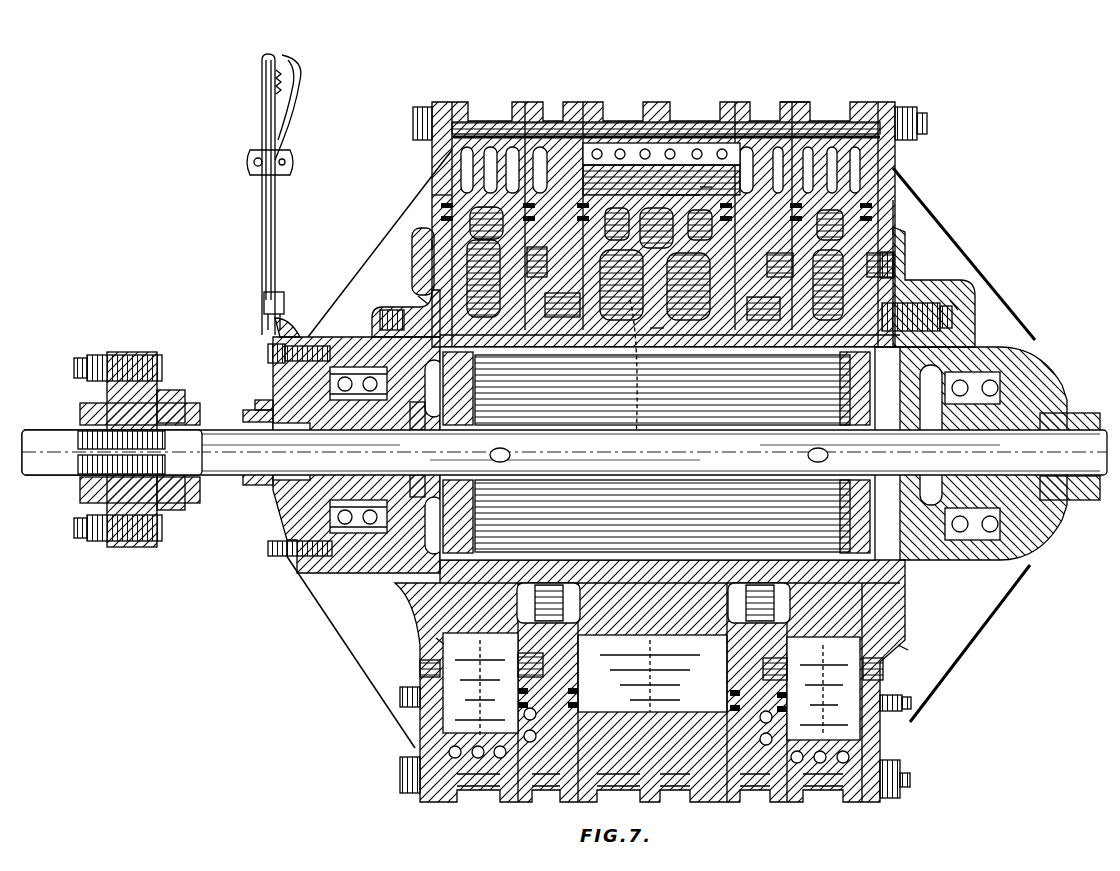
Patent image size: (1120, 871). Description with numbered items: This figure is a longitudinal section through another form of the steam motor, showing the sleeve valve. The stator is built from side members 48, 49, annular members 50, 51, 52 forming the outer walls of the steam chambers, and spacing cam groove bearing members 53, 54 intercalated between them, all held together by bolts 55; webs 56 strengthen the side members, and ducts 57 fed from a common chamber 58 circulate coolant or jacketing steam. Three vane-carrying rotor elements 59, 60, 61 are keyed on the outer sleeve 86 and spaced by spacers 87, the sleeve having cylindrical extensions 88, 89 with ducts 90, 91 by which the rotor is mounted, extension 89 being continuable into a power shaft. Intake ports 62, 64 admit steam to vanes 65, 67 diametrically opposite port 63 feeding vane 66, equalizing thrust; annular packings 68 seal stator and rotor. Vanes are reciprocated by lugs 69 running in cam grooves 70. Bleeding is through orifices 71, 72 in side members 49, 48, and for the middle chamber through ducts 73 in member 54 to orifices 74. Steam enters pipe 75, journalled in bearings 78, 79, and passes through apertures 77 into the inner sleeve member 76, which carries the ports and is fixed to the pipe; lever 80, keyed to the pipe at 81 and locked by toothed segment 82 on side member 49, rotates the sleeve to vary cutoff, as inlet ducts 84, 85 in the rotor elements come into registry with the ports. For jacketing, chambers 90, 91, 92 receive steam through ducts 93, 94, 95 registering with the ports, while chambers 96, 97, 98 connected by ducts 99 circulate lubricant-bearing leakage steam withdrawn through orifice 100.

The side member 48 is at (896, 168).
The side member 49 is at (452, 160).
The annular member 50 is at (815, 121).
The annular member 51 is at (680, 190).
The annular member 52 is at (478, 121).
The spacing cam groove bearing member 53 is at (752, 121).
The spacing cam groove bearing member 54 is at (545, 125).
The bolts 55 is at (917, 125).
The webs 56 is at (960, 221).
The ducts 57 is at (457, 104).
The common chamber 58 is at (660, 150).
The rotor element 59 is at (440, 207).
The rotor element 60 is at (690, 175).
The rotor element 61 is at (906, 255).
The intake port 62 is at (470, 365).
The port 63 is at (650, 557).
The intake port 64 is at (800, 365).
The vane 65 is at (480, 684).
The vane 66 is at (650, 681).
The vane 67 is at (823, 688).
The annular packings 68 is at (580, 700).
The lugs 69 is at (418, 641).
The cam grooves 70 is at (568, 140).
The orifices 71 is at (405, 692).
The orifices 72 is at (903, 704).
The ducts 73 is at (613, 150).
The orifices 74 is at (588, 160).
The pipe 75 is at (240, 456).
The inner sleeve member 76 is at (693, 345).
The apertures 77 is at (497, 464).
The bearing 78 is at (472, 495).
The bearing 79 is at (832, 420).
The lever 80 is at (262, 240).
The key 81 is at (252, 424).
The toothed segment 82 is at (285, 320).
The steam inlet duct 84 is at (655, 676).
The steam inlet duct 85 is at (440, 640).
The outer sleeve 86 is at (545, 365).
The spacers 87 is at (580, 360).
The cylindrical extension 88 is at (278, 395).
The cylindrical extension 89 is at (1078, 500).
The ducts 90 is at (440, 200).
The ducts 91 is at (705, 185).
The chamber 92 is at (900, 228).
The duct 93 is at (420, 300).
The duct 94 is at (657, 330).
The duct 95 is at (955, 305).
The chamber 96 is at (440, 245).
The chamber 97 is at (636, 446).
The chamber 98 is at (962, 292).
The ducts 99 is at (720, 350).
The orifice 100 is at (392, 328).